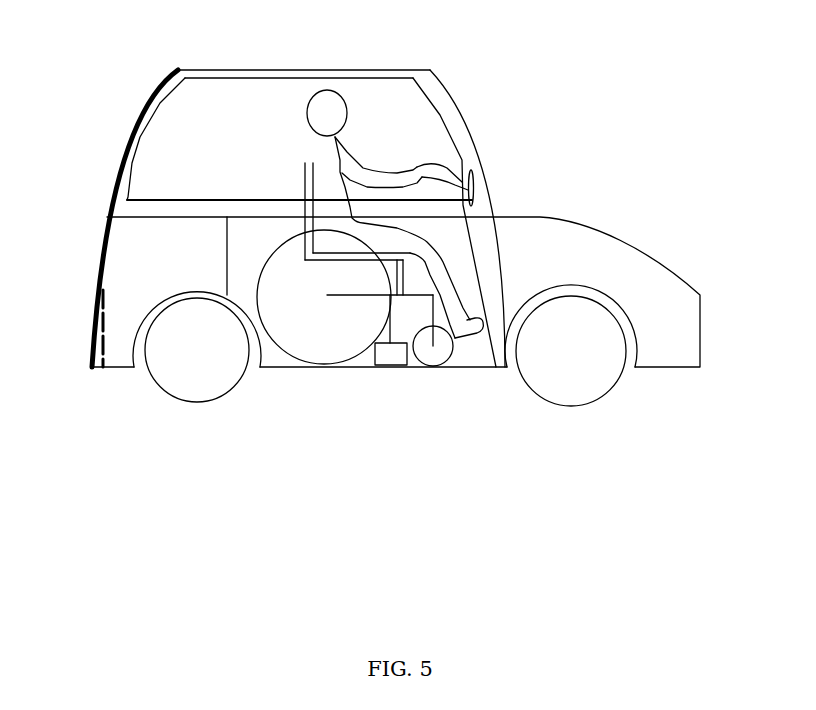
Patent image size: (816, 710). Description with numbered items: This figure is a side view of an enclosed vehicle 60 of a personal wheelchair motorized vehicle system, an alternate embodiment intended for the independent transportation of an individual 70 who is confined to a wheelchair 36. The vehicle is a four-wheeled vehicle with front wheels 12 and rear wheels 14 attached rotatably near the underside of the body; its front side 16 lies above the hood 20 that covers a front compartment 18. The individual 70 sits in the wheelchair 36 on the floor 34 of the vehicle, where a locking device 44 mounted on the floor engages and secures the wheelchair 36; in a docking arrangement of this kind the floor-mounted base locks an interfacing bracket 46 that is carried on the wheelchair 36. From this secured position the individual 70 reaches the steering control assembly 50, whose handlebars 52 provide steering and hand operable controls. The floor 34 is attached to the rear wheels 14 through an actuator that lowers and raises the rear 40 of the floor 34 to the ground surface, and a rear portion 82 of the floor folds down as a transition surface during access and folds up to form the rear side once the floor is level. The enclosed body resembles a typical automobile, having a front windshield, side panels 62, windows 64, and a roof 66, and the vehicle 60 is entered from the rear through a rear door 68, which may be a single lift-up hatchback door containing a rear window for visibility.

The front wheels 12 is at (577, 368).
The rear wheels 14 is at (197, 373).
The front side 16 is at (706, 316).
The front compartment 18 is at (667, 347).
The hood 20 is at (600, 232).
The floor 34 is at (275, 368).
The wheelchair 36 is at (317, 317).
The rear of the floor 40 is at (88, 357).
The locking device 44 is at (393, 355).
The interfacing bracket 46 is at (413, 367).
The steering control assembly 50 is at (473, 176).
The handlebars 52 is at (447, 168).
The enclosed vehicle 60 is at (605, 140).
The side panels 62 is at (238, 248).
The windows 64 is at (170, 97).
The roof 66 is at (242, 70).
The rear door 68 is at (110, 187).
The individual 70 is at (317, 153).
The rear portion 82 is at (102, 327).